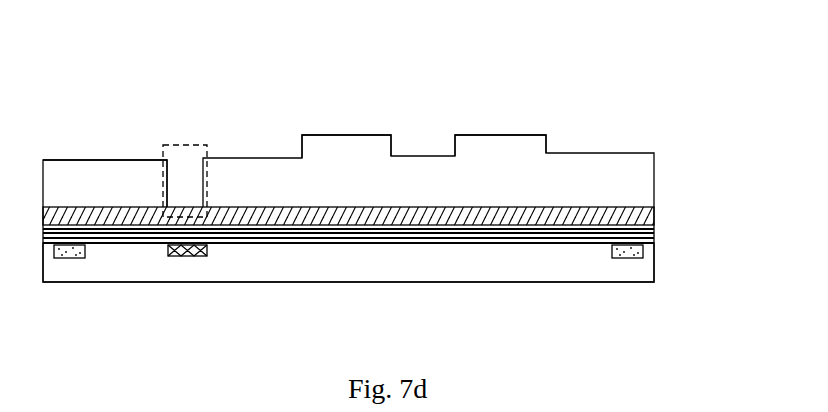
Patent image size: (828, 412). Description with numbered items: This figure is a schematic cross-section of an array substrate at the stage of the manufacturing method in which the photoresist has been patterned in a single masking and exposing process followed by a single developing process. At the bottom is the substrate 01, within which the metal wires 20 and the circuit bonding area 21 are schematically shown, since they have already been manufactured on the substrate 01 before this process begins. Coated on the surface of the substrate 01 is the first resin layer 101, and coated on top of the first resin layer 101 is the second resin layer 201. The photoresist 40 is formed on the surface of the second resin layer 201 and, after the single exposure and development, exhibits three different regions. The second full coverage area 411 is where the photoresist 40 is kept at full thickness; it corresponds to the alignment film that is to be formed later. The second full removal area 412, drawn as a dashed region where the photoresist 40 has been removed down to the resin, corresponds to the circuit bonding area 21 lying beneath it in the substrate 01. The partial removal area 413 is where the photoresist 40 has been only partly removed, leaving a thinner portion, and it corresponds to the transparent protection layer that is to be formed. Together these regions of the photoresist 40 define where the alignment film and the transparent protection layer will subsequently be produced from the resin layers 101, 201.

The substrate 01 is at (640, 268).
The first resin layer 101 is at (640, 235).
The second resin layer 201 is at (640, 215).
The photoresist 40 is at (635, 168).
The partial removal area of the photoresist 413 is at (87, 178).
The second full removal area of the photoresist 412 is at (180, 160).
The second full coverage area of the photoresist 411 is at (340, 175).
The metal wire 20 is at (75, 250).
The circuit bonding area 21 is at (187, 250).